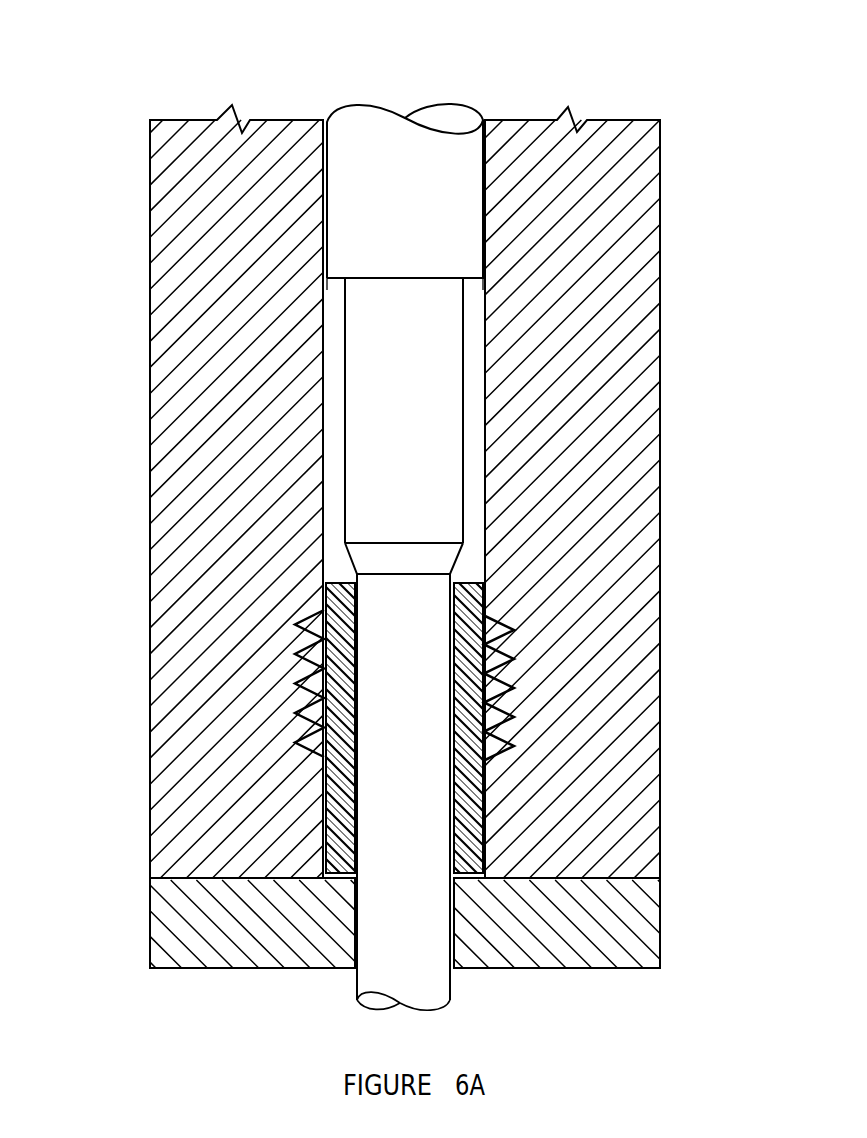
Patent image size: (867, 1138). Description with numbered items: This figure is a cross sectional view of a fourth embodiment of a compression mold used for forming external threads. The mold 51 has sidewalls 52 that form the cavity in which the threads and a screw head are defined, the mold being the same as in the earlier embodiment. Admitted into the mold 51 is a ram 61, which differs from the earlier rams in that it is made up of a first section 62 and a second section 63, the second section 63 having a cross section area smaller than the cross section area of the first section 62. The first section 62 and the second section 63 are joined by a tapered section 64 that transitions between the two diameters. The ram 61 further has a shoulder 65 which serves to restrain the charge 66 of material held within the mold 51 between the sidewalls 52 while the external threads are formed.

The mold 51 is at (675, 375).
The sidewalls 52 is at (661, 561).
The ram 61 is at (455, 92).
The first section 62 is at (344, 318).
The second section 63 is at (322, 633).
The tapered section 64 is at (356, 574).
The shoulder 65 is at (476, 278).
The charge 66 is at (322, 726).